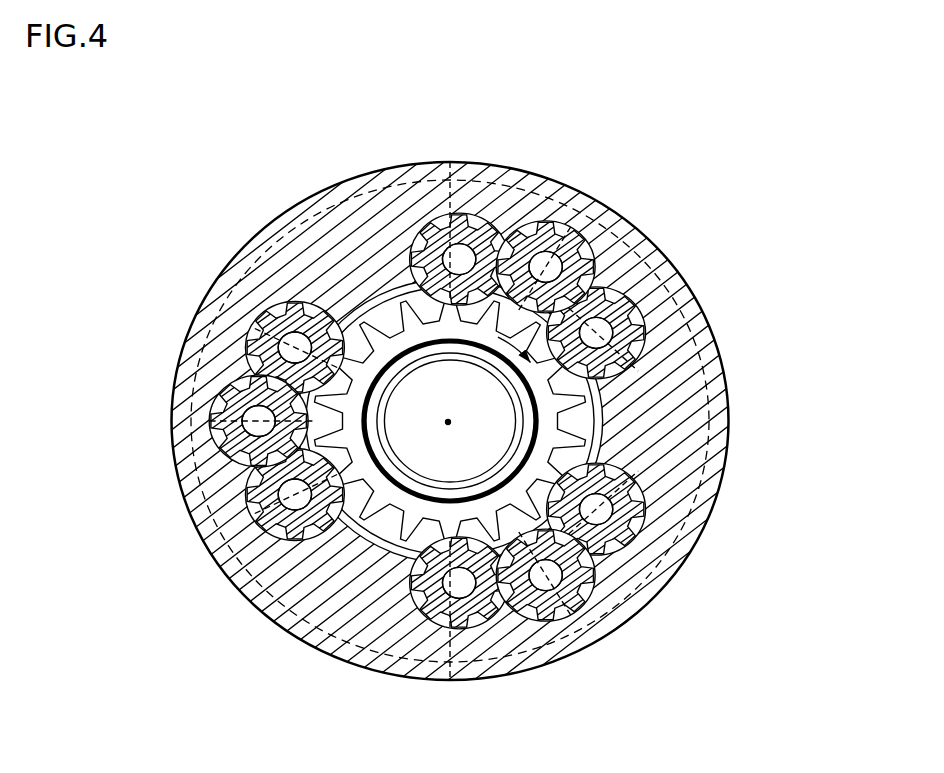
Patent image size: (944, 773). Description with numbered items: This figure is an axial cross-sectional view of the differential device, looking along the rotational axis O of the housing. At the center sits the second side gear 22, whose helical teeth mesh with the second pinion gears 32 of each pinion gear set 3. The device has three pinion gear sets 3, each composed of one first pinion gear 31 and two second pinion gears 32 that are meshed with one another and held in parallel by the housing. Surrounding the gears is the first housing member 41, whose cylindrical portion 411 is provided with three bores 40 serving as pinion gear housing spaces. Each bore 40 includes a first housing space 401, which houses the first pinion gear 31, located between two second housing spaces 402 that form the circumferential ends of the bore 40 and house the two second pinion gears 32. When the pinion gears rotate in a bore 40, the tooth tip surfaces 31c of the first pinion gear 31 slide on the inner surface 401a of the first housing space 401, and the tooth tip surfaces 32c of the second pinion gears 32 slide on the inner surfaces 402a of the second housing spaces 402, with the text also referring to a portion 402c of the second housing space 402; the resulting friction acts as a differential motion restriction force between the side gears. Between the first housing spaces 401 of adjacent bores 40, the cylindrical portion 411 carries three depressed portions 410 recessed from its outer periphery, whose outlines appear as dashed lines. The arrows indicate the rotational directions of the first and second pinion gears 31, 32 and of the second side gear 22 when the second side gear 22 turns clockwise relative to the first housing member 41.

The pinion gear set 3 is at (103, 368).
The second side gear 22 is at (395, 335).
The first pinion gear 31 is at (545, 230).
The tooth tip surface of the first pinion gear 31c is at (547, 622).
The second pinion gear 32 is at (468, 224).
The tooth tip surface of the second pinion gear 32c is at (648, 511).
The bore 40 is at (620, 98).
The first housing member 41 is at (376, 172).
The first housing space 401 is at (566, 238).
The inner surface of the first housing space 401a is at (580, 602).
The second housing space 402 is at (464, 224).
The inner surface of the second housing space 402a is at (432, 590).
The end portion of second carrier shaft 402c is at (650, 519).
The depressed portion 410 is at (253, 232).
The cylindrical portion 411 is at (645, 248).
The rotational axis O is at (450, 420).